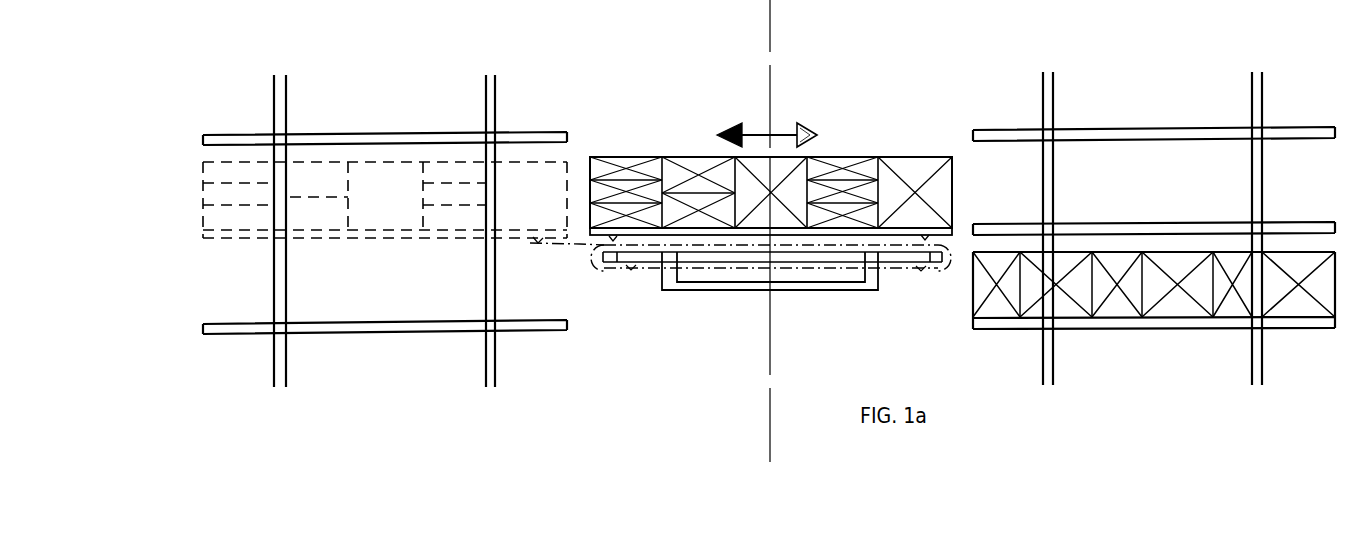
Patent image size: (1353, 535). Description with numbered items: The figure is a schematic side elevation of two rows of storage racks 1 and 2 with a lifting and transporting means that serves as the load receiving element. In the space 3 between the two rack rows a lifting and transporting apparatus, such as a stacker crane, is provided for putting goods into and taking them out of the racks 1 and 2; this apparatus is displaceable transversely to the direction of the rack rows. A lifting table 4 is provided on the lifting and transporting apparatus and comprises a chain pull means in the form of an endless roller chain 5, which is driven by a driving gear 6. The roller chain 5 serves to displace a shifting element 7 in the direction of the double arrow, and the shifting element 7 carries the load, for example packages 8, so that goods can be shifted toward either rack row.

The storage rack 1 is at (1137, 113).
The storage rack 2 is at (378, 101).
The space 3 is at (742, 192).
The lifting table 4 is at (841, 283).
The endless roller chain 5 is at (897, 269).
The driving gear 6 is at (943, 262).
The shifting element 7 is at (652, 233).
The packages 8 is at (647, 168).